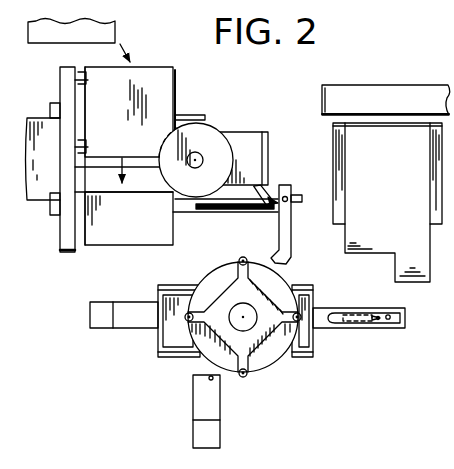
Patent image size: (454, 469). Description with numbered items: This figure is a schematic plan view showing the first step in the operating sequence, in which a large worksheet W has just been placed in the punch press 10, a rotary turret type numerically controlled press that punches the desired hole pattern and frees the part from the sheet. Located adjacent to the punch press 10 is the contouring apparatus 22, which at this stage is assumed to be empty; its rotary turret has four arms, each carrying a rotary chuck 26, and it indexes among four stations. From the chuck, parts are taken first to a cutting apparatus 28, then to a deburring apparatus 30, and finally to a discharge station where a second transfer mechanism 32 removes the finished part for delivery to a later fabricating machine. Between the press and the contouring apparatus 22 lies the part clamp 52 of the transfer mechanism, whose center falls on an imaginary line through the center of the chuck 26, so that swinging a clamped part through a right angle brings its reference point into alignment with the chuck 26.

The punch press 10 is at (194, 112).
The contouring apparatus 22 is at (248, 323).
The rotary chuck 26 is at (242, 257).
The cutting apparatus 28 is at (110, 330).
The deburring apparatus 30 is at (222, 431).
The second transfer mechanism 32 is at (389, 329).
The part clamp 52 is at (272, 262).
The worksheet W is at (117, 137).